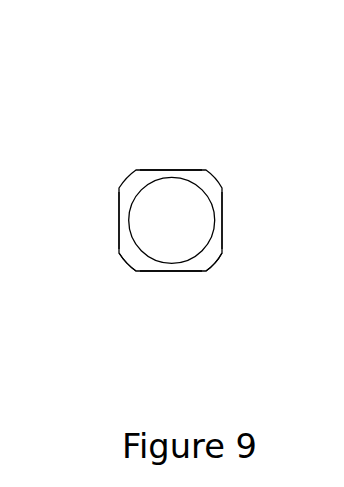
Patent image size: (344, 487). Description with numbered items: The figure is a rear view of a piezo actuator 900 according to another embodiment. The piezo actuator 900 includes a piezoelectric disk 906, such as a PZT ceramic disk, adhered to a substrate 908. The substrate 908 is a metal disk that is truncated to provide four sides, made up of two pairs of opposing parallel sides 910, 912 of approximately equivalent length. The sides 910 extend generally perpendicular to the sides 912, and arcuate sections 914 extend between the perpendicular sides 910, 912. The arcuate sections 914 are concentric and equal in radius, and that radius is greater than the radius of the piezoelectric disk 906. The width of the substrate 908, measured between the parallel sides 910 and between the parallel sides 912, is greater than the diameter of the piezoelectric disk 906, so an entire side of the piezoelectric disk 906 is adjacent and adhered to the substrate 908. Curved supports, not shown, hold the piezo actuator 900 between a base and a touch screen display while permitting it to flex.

The piezo actuator 900 is at (266, 78).
The piezoelectric disk 906 is at (213, 232).
The substrate 908 is at (228, 179).
The sides 910 is at (158, 170).
The sides 912 is at (119, 230).
The arcuate sections 914 is at (125, 259).